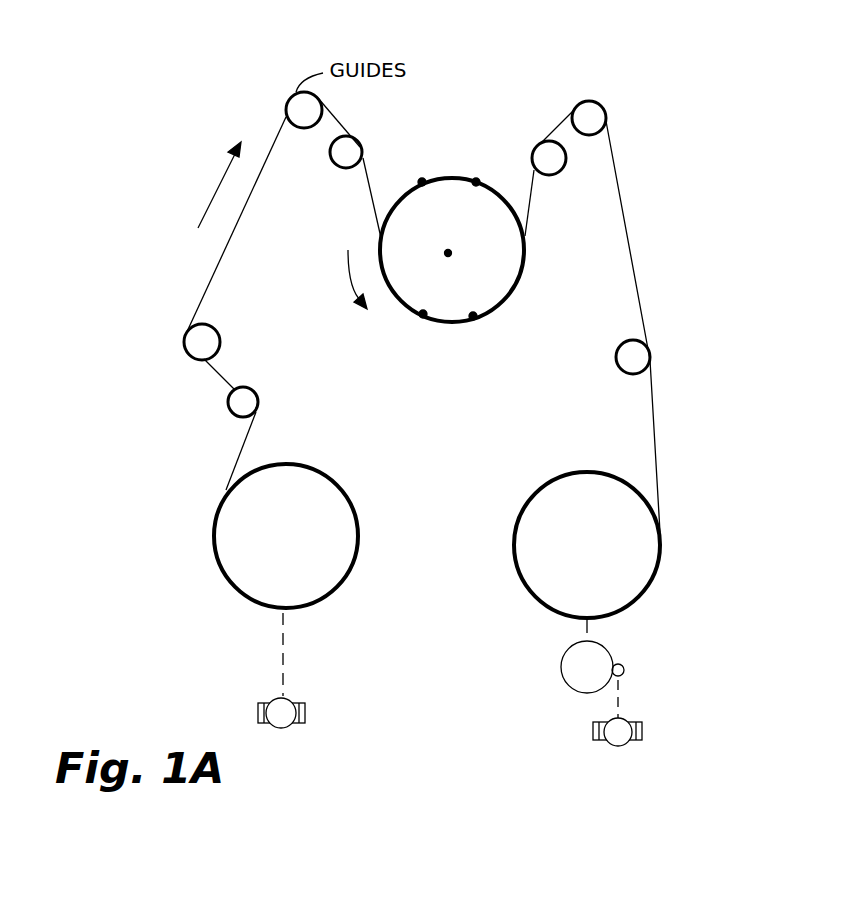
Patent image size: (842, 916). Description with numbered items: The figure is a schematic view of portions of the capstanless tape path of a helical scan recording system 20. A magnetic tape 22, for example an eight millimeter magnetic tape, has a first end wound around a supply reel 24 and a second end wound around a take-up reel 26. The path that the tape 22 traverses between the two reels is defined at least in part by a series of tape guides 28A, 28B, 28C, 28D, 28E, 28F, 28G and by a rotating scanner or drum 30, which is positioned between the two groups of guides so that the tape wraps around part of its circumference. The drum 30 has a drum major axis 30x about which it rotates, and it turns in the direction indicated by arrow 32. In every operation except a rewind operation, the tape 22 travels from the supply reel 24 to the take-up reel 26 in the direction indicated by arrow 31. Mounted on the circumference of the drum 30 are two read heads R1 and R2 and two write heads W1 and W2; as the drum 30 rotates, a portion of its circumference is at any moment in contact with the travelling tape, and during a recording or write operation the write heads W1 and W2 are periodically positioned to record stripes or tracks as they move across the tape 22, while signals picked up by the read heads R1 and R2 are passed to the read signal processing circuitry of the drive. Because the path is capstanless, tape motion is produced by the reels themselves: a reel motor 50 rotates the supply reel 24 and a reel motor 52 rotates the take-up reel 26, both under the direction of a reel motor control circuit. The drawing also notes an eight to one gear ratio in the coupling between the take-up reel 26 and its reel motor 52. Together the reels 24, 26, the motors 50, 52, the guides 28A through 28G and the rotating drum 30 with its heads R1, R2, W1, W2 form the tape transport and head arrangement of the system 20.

The capstanless helical scan recording system 20 is at (633, 122).
The magnetic tape 22 is at (652, 242).
The supply reel 24 is at (358, 528).
The take-up reel 26 is at (513, 530).
The tape guide 28A is at (261, 403).
The tape guide 28B is at (222, 340).
The tape guide 28C is at (286, 113).
The tape guide 28D is at (350, 168).
The tape guide 28E is at (531, 156).
The tape guide 28F is at (575, 110).
The tape guide 28G is at (616, 354).
The drum 30 is at (522, 286).
The drum major axis 30x is at (448, 254).
The arrow 31 is at (217, 180).
The arrow 32 is at (348, 282).
The reel motor 50 is at (306, 711).
The reel motor 52 is at (593, 733).
The read head R1 is at (421, 182).
The read head R2 is at (477, 182).
The write head W1 is at (474, 318).
The write head W2 is at (422, 316).